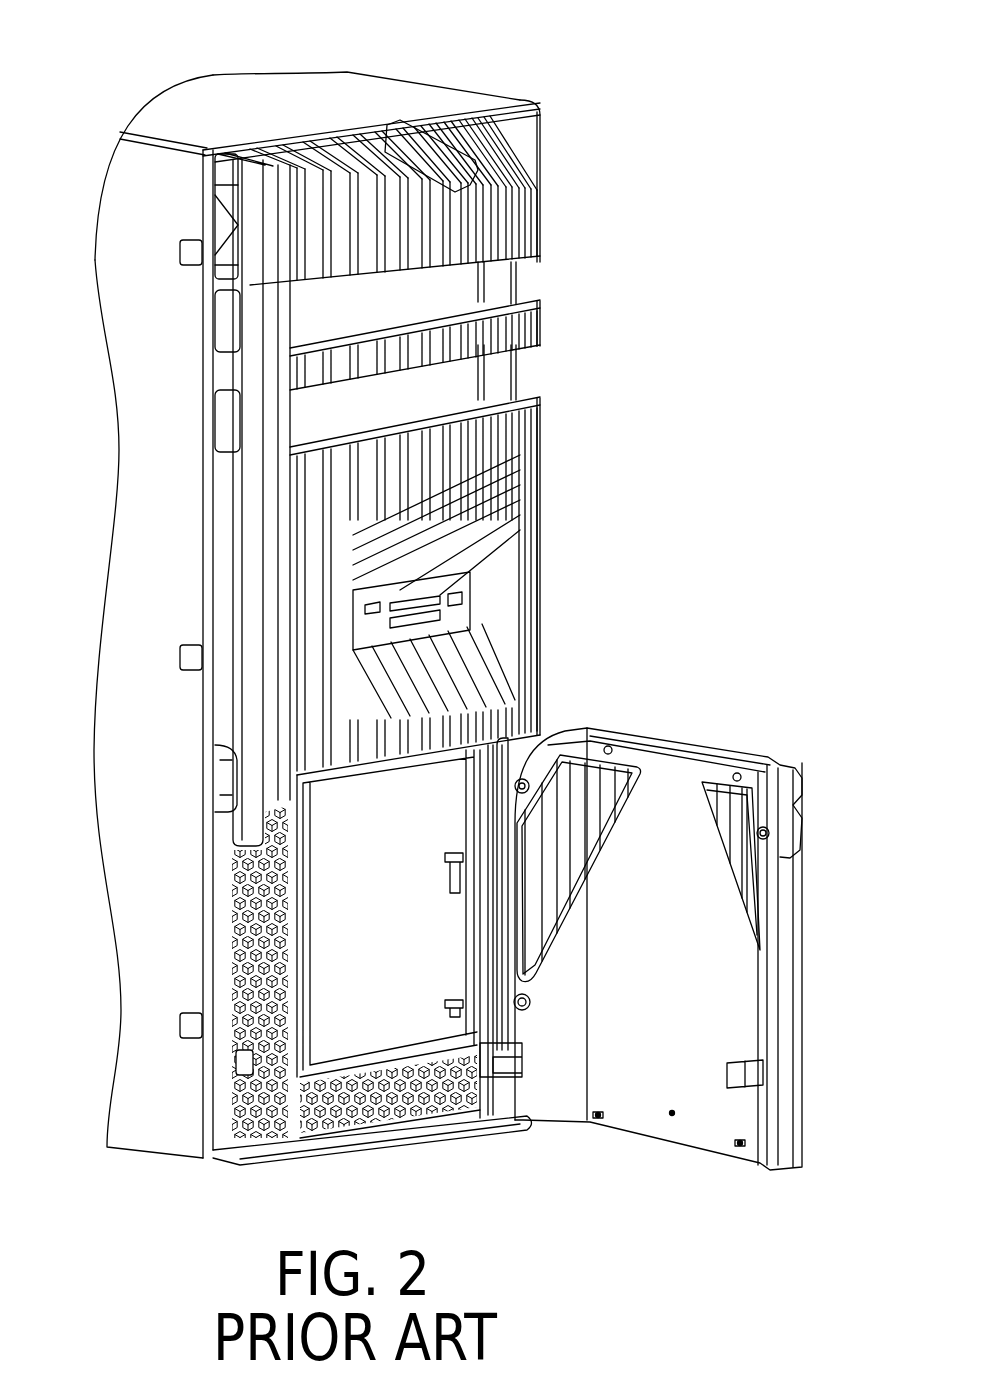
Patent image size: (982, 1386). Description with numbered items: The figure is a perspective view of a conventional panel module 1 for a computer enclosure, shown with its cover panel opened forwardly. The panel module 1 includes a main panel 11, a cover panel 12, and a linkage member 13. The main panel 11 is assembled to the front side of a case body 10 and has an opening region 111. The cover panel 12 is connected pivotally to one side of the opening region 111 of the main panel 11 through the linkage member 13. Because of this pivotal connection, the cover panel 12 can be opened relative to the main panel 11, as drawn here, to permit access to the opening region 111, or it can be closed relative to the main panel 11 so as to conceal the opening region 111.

The panel module 1 is at (592, 94).
The case body 10 is at (377, 90).
The main panel 11 is at (497, 228).
The opening region 111 is at (362, 940).
The cover panel 12 is at (630, 736).
The linkage member 13 is at (502, 932).